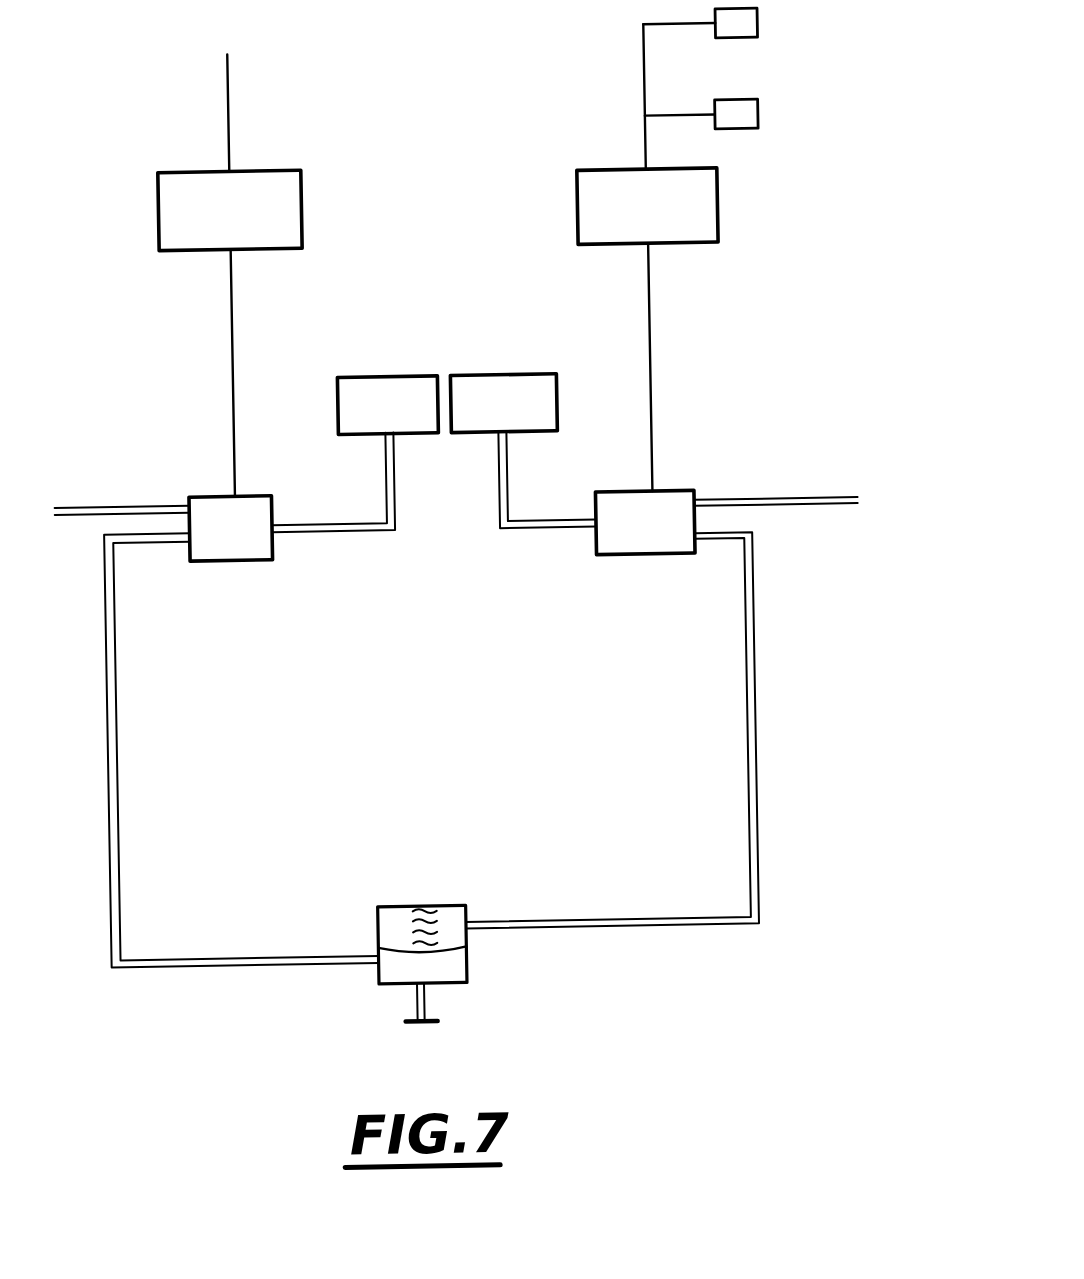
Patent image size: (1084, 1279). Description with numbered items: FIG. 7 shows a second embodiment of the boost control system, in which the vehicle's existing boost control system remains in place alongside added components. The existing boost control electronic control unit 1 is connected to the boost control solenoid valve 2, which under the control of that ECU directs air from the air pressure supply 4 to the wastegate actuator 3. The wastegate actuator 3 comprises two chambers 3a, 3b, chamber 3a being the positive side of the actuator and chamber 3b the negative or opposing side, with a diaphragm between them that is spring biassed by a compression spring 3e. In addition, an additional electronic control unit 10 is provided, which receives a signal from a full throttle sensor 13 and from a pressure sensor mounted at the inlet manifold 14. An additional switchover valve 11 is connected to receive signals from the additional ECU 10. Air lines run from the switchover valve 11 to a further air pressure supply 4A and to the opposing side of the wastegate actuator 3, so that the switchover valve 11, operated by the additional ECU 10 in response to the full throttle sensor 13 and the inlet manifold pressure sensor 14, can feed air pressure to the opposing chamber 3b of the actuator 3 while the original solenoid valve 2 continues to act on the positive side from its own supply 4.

The boost control electronic control unit 1 is at (231, 275).
The boost control solenoid valve 2 is at (237, 547).
The wastegate actuator 3 is at (436, 914).
The chamber 3a is at (399, 970).
The chamber 3b is at (388, 916).
The compression spring 3e is at (420, 915).
The air pressure supply 4 is at (400, 392).
The air pressure supply 4A is at (524, 397).
The additional electronic control unit 10 is at (648, 257).
The switchover valve 11 is at (675, 549).
The full throttle sensor 13 is at (757, 124).
The pressure sensor mounted at the inlet manifold 14 is at (749, 30).